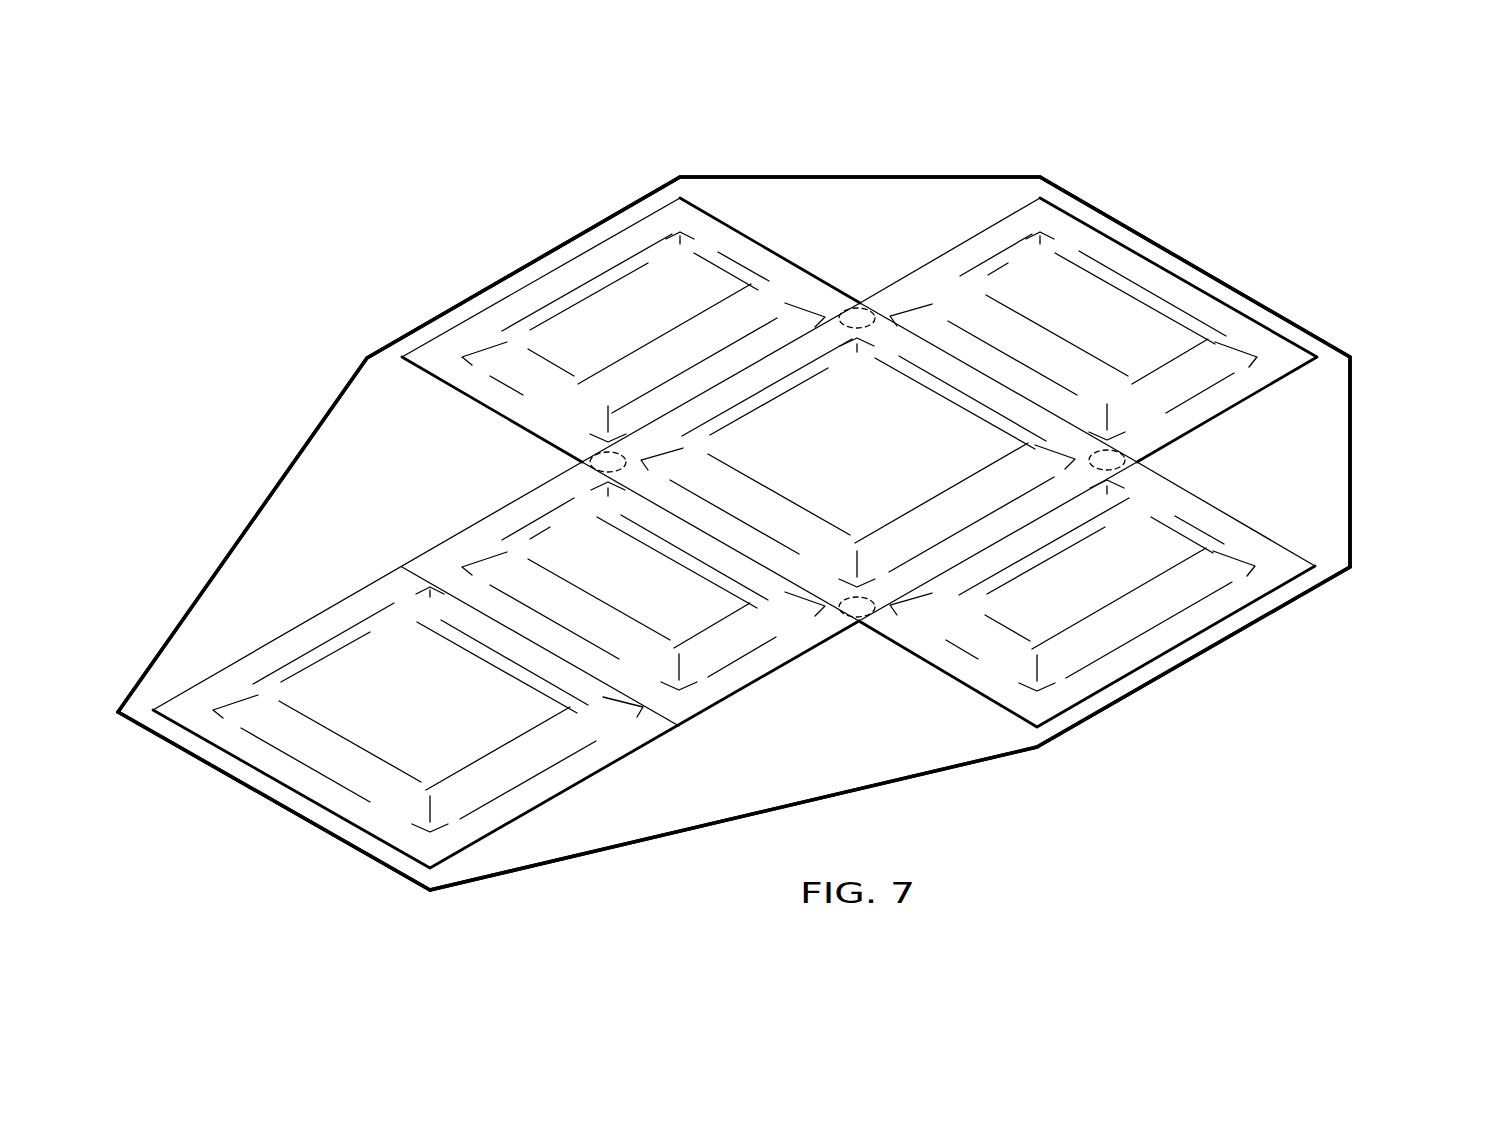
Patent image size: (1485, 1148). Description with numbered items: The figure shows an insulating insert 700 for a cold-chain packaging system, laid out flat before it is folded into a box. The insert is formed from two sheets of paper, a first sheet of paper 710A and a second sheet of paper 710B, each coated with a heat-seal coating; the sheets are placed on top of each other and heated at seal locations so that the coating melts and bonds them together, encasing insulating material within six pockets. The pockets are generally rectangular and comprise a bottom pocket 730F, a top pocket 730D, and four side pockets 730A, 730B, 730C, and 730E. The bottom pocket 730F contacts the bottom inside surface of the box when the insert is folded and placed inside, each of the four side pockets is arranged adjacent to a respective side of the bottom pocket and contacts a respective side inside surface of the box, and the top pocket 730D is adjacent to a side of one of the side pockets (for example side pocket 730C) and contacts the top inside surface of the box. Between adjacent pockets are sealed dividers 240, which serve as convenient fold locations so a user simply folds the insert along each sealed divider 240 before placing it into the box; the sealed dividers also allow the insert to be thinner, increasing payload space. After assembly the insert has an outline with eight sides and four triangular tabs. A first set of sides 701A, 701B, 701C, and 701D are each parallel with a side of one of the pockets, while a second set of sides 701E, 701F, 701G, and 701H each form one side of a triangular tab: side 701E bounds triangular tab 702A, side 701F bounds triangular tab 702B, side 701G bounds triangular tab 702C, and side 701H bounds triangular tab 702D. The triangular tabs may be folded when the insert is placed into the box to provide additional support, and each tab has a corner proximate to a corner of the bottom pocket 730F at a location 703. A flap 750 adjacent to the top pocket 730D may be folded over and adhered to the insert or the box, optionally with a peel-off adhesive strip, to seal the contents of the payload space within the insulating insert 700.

The insulating insert 700 is at (478, 148).
The side 701A is at (1240, 292).
The side 701B is at (463, 300).
The side 701C is at (186, 751).
The side 701D is at (1176, 660).
The side 701E is at (947, 177).
The side 701F is at (224, 556).
The side 701G is at (573, 855).
The side 701H is at (1352, 393).
The triangular tab 702A is at (855, 186).
The triangular tab 702B is at (268, 518).
The triangular tab 702C is at (948, 742).
The triangular tab 702D is at (1328, 442).
The location 703 is at (868, 310).
The first sheet of paper 710A is at (712, 216).
The second sheet of paper 710B is at (1300, 334).
The side pocket 730A is at (1102, 297).
The side pocket 730B is at (612, 298).
The side pocket 730C is at (676, 588).
The top pocket 730D is at (461, 708).
The side pocket 730E is at (1103, 588).
The bottom pocket 730F is at (889, 413).
The sealed divider 240 is at (707, 400).
The flap 750 is at (356, 827).